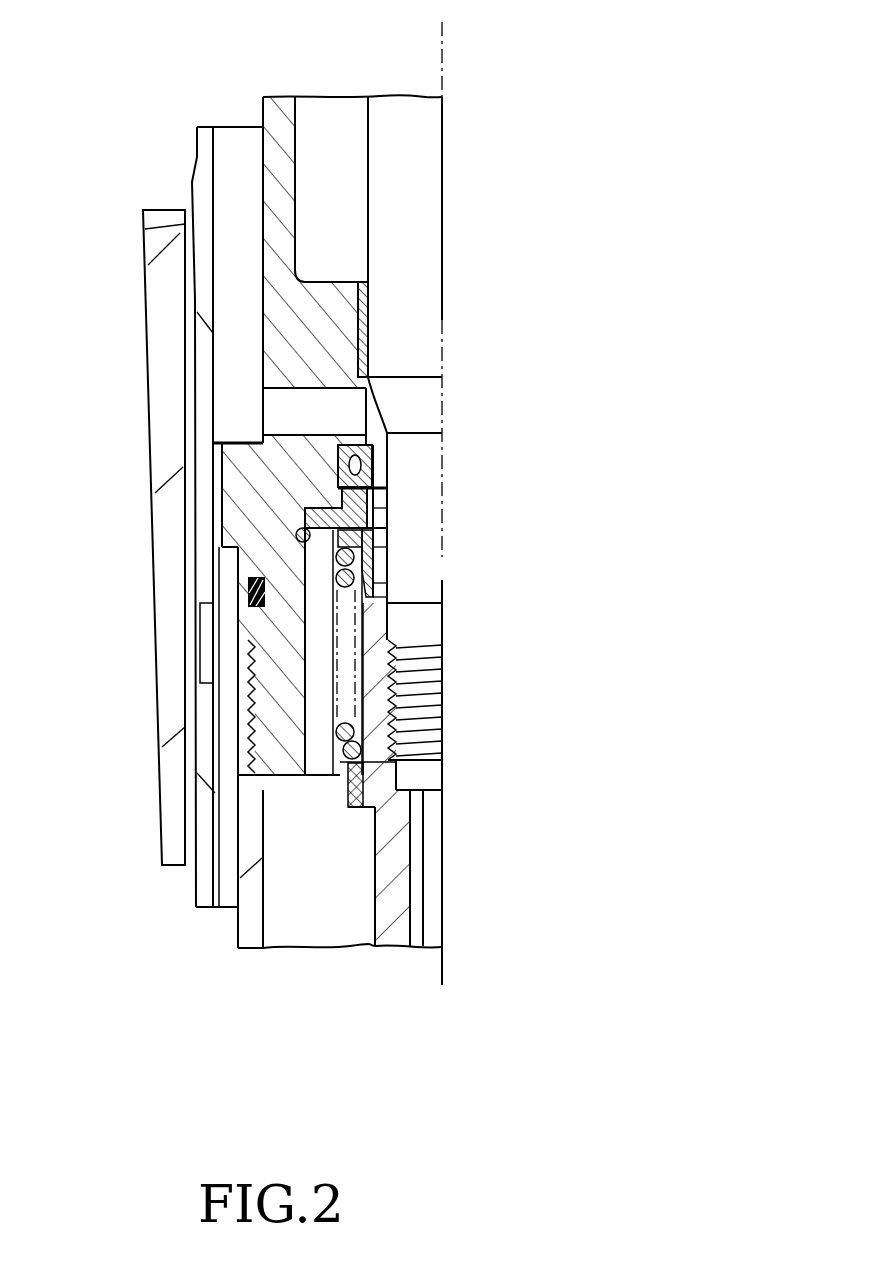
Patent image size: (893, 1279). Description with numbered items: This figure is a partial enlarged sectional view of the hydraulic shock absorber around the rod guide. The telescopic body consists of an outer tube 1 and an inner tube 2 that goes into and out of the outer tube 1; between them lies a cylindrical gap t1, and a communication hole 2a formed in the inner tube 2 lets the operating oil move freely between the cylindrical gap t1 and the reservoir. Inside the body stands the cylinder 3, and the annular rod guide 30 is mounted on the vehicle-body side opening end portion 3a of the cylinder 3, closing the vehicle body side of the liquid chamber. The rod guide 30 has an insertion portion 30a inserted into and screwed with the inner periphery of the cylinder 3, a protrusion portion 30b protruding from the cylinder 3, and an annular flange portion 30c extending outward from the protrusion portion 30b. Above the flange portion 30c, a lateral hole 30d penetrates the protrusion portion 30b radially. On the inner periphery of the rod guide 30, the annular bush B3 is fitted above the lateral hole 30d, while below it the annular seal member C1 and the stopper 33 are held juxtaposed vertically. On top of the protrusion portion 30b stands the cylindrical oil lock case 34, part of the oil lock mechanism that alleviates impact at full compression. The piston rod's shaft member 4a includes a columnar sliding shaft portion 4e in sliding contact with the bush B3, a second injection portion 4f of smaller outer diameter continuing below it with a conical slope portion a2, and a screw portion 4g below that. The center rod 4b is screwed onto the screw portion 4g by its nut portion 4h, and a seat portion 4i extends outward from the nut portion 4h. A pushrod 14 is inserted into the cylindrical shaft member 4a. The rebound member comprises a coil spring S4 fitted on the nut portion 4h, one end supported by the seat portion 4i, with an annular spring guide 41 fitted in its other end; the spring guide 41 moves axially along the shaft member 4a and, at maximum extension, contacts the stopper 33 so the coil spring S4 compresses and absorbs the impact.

The outer tube 1 is at (145, 277).
The cylindrical gap t1 is at (143, 230).
The inner tube 2 is at (190, 182).
The communication hole 2a is at (200, 647).
The cylinder 3 is at (237, 923).
The vehicle-body side opening end portion 3a is at (240, 703).
The shaft member 4a is at (360, 130).
The center rod 4b is at (373, 917).
The sliding shaft portion 4e is at (415, 210).
The second injection portion 4f is at (427, 490).
The screw portion 4g is at (430, 700).
The nut portion 4h is at (377, 677).
The seat portion 4i is at (350, 793).
The pushrod 14 is at (437, 877).
The rod guide 30 is at (268, 787).
The insertion portion 30a is at (273, 723).
The protrusion portion 30b is at (277, 323).
The flange portion 30c is at (207, 443).
The lateral hole 30d is at (280, 403).
The stopper 33 is at (373, 510).
The oil lock case 34 is at (267, 143).
The spring guide 41 is at (373, 563).
The bush B3 is at (373, 313).
The seal member C1 is at (393, 453).
The conical slope portion a2 is at (420, 408).
The coil spring S4 is at (317, 777).